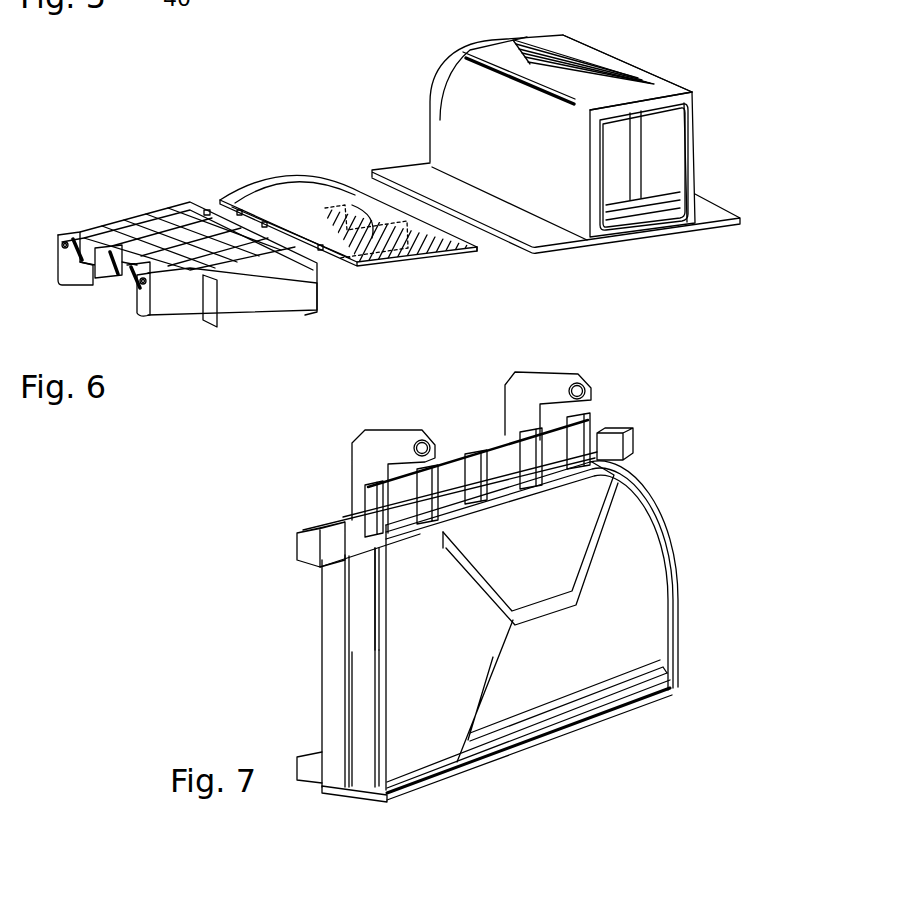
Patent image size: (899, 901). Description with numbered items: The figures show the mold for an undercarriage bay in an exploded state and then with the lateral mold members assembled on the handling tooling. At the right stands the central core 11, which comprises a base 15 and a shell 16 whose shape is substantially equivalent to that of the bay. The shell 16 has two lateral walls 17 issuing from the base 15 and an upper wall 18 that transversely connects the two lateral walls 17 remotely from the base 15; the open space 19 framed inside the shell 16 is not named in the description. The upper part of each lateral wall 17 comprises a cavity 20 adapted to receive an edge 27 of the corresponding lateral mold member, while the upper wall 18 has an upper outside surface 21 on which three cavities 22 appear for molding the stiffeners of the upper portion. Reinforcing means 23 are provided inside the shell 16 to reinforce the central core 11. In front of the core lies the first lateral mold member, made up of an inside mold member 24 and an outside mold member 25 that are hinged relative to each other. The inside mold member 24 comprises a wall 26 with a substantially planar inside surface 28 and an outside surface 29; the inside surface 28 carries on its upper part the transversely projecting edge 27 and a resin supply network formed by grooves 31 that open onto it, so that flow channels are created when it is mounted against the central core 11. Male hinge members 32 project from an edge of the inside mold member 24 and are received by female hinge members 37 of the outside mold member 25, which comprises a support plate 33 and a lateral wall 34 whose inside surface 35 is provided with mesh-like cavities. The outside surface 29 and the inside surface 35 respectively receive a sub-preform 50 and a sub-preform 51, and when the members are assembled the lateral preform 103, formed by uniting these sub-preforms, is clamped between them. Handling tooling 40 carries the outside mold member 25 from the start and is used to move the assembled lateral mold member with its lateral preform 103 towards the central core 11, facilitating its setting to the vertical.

In FIG. 6, the central core 11 is at (722, 232).
In FIG. 6, the base 15 is at (733, 212).
In FIG. 6, the shell 16 is at (692, 155).
In FIG. 6, the lateral walls 17 is at (440, 103).
In FIG. 6, the upper wall 18 is at (550, 43).
In FIG. 6, the receiving space 19 is at (568, 212).
In FIG. 6, the cavity 20 is at (485, 62).
In FIG. 6, the upper outside surface 21 is at (603, 95).
In FIG. 6, the cavities 22 is at (650, 80).
In FIG. 6, the reinforcing means 23 is at (640, 157).
In FIG. 6, the inside mold member 24 is at (366, 230).
In FIG. 7, the inside mold member 24 is at (527, 633).
In FIG. 6, the outside mold member 25 is at (125, 188).
In FIG. 7, the outside mold member 25 is at (363, 593).
In FIG. 6, the wall 26 is at (423, 253).
In FIG. 7, the wall 26 is at (383, 713).
In FIG. 6, the edge 27 is at (473, 250).
In FIG. 7, the inside surface 28 is at (652, 603).
In FIG. 7, the outside surface 29 is at (370, 625).
In FIG. 7, the grooves 31 is at (573, 703).
In FIG. 6, the male hinge members 32 is at (320, 247).
In FIG. 7, the support plate 33 is at (363, 797).
In FIG. 6, the lateral wall 34 is at (243, 287).
In FIG. 7, the lateral wall 34 is at (353, 768).
In FIG. 7, the inside surface 35 is at (378, 683).
In FIG. 6, the female hinge members 37 is at (208, 213).
In FIG. 6, the handling tooling 40 is at (187, 255).
In FIG. 7, the handling tooling 40 is at (449, 640).
In FIG. 6, the sub-preform 50 is at (370, 218).
In FIG. 6, the sub-preform 51 is at (147, 213).
In FIG. 7, the lateral preform 103 is at (593, 417).